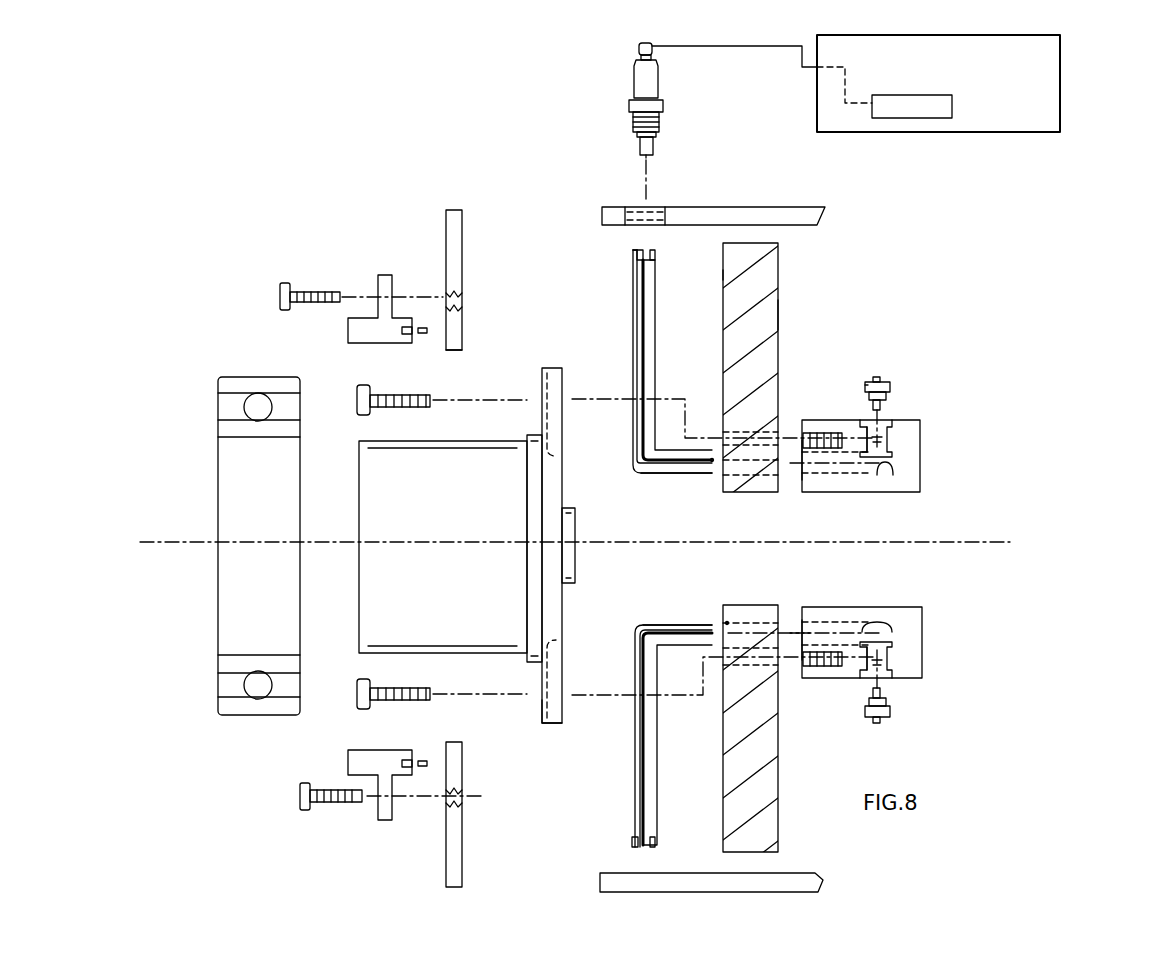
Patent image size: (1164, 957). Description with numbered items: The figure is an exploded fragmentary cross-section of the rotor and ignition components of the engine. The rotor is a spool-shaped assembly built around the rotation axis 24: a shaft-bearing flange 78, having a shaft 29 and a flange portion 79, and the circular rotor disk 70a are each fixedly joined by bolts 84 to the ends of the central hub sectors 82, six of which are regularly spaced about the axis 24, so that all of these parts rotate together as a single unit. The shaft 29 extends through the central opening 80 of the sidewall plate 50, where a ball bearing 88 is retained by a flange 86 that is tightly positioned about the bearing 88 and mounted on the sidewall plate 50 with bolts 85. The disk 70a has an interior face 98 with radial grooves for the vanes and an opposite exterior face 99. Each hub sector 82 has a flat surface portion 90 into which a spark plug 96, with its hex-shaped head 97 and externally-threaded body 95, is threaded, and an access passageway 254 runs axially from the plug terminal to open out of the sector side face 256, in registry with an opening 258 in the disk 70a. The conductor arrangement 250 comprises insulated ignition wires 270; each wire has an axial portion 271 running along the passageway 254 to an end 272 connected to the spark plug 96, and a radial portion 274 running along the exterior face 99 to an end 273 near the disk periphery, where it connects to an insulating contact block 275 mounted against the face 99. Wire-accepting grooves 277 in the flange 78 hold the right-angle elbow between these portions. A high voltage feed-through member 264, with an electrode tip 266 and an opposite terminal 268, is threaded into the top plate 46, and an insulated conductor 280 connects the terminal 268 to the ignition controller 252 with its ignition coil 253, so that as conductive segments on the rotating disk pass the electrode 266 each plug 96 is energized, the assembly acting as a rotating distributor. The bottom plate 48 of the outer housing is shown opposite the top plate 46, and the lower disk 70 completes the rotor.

The rotation axis 24 is at (180, 543).
The conductor arrangement 250 is at (418, 162).
The ball bearing 88 is at (240, 382).
The shaft 29 is at (400, 441).
The wire-accepting grooves 277 is at (550, 437).
The shaft-bearing flange 78 is at (552, 727).
The flange portion 79 is at (542, 703).
The bolts 84 is at (397, 395).
The flange 86 is at (367, 318).
The bolts 85 is at (300, 787).
The sidewall plate 50 is at (445, 252).
The central opening 80 is at (455, 350).
The high voltage feed-through member 264 is at (660, 117).
The terminal 268 is at (639, 48).
The electrode tip 266 is at (647, 158).
The insulated conductor 280 is at (728, 50).
The top plate 46 is at (757, 205).
The ignition controller 252 is at (1060, 87).
The ignition coil 253 is at (952, 118).
The rotor disk 70a is at (778, 282).
The interior face 98 is at (775, 315).
The exterior face 99 is at (723, 273).
The wire portion 274 is at (660, 345).
The ignition wire 270 is at (655, 307).
The wire end 273 is at (648, 285).
The contact block 275 is at (630, 259).
The wire portion 271 is at (667, 473).
The wire end 272 is at (712, 437).
The hub sector 82 is at (913, 420).
The access passageway 254 is at (893, 467).
The side face 256 is at (800, 483).
The spark plug 96 is at (883, 380).
The hex-shaped head 97 is at (865, 385).
The spark plug body 95 is at (887, 387).
The flat surface portion 90 is at (897, 420).
The lower block 70 is at (775, 817).
The openings 258 is at (727, 623).
The bottom plate 48 is at (800, 873).